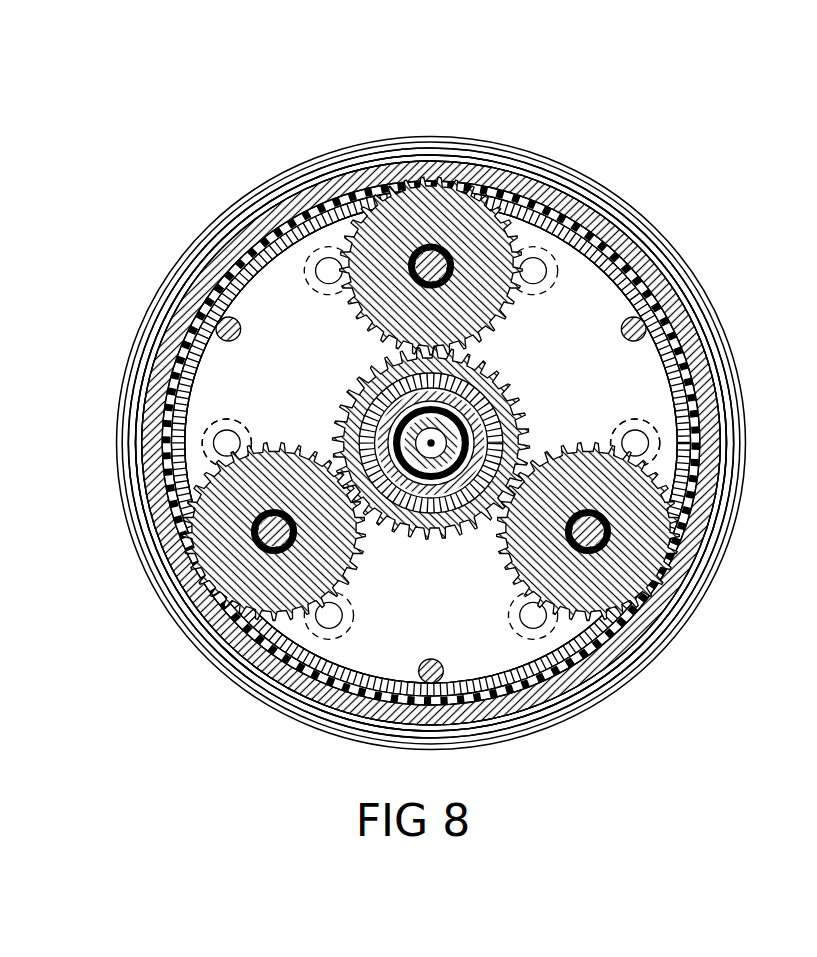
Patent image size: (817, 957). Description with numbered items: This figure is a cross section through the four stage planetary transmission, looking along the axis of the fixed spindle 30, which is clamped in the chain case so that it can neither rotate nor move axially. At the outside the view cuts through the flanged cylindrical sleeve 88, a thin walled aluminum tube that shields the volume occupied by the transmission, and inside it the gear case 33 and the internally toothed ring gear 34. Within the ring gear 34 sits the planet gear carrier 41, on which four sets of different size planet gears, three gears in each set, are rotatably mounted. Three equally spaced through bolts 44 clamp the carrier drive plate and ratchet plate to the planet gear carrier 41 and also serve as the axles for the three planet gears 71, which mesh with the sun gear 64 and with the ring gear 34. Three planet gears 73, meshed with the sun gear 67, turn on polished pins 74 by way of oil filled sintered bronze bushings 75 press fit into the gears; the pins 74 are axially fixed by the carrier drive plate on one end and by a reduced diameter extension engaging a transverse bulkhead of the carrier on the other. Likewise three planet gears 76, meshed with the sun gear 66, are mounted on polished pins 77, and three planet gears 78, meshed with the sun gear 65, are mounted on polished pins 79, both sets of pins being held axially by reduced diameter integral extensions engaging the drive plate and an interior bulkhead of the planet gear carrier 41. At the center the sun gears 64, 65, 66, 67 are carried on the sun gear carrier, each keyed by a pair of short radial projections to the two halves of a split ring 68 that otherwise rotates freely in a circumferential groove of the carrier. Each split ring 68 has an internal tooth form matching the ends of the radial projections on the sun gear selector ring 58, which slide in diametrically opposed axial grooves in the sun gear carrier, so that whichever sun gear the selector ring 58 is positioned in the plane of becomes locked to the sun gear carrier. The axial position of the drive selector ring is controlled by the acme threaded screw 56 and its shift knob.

The spindle 30 is at (250, 507).
The gear case 33 is at (327, 167).
The internally toothed ring gear 34 is at (393, 163).
The planet gear carrier 41 is at (587, 213).
The through bolts 44 is at (222, 322).
The acme threaded screw 56 is at (693, 540).
The sun gear selector ring 58 is at (652, 457).
The sun gear 64 is at (175, 375).
The sun gear 65 is at (708, 360).
The sun gear 66 is at (600, 408).
The sun gear 67 is at (225, 415).
The split ring 68 is at (687, 328).
The planet gears 71 is at (173, 327).
The planet gears 73 is at (353, 222).
The polished pins 74 is at (345, 233).
The oil filled sintered bronze bushings 75 is at (252, 540).
The planet gears 76 is at (262, 670).
The polished pins 77 is at (322, 258).
The planet gears 78 is at (140, 398).
The polished pins 79 is at (185, 455).
The flanged cylindrical sleeve 88 is at (252, 188).